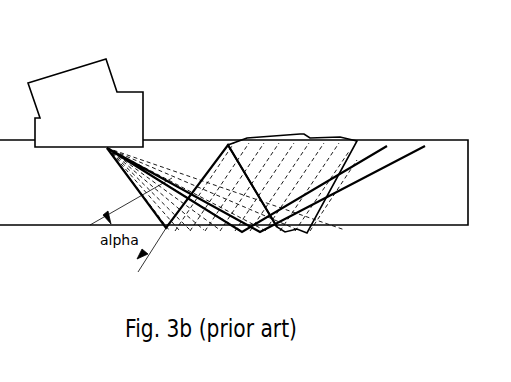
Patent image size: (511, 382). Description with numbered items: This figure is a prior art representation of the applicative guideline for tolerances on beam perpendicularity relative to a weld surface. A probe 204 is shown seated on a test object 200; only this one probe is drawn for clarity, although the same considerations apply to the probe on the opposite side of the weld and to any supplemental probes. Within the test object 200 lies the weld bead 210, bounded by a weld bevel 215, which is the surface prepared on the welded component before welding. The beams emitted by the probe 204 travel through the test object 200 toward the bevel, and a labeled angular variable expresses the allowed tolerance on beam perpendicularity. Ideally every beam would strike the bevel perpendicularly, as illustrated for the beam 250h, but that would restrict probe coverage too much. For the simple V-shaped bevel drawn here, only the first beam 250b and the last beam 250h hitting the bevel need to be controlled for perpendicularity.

The test object 200 is at (442, 158).
The probe 204 is at (43, 90).
The weld bead 210 is at (286, 138).
The weld bevel 215 is at (257, 152).
The first beam 250b is at (228, 150).
The last beam 250h is at (297, 229).